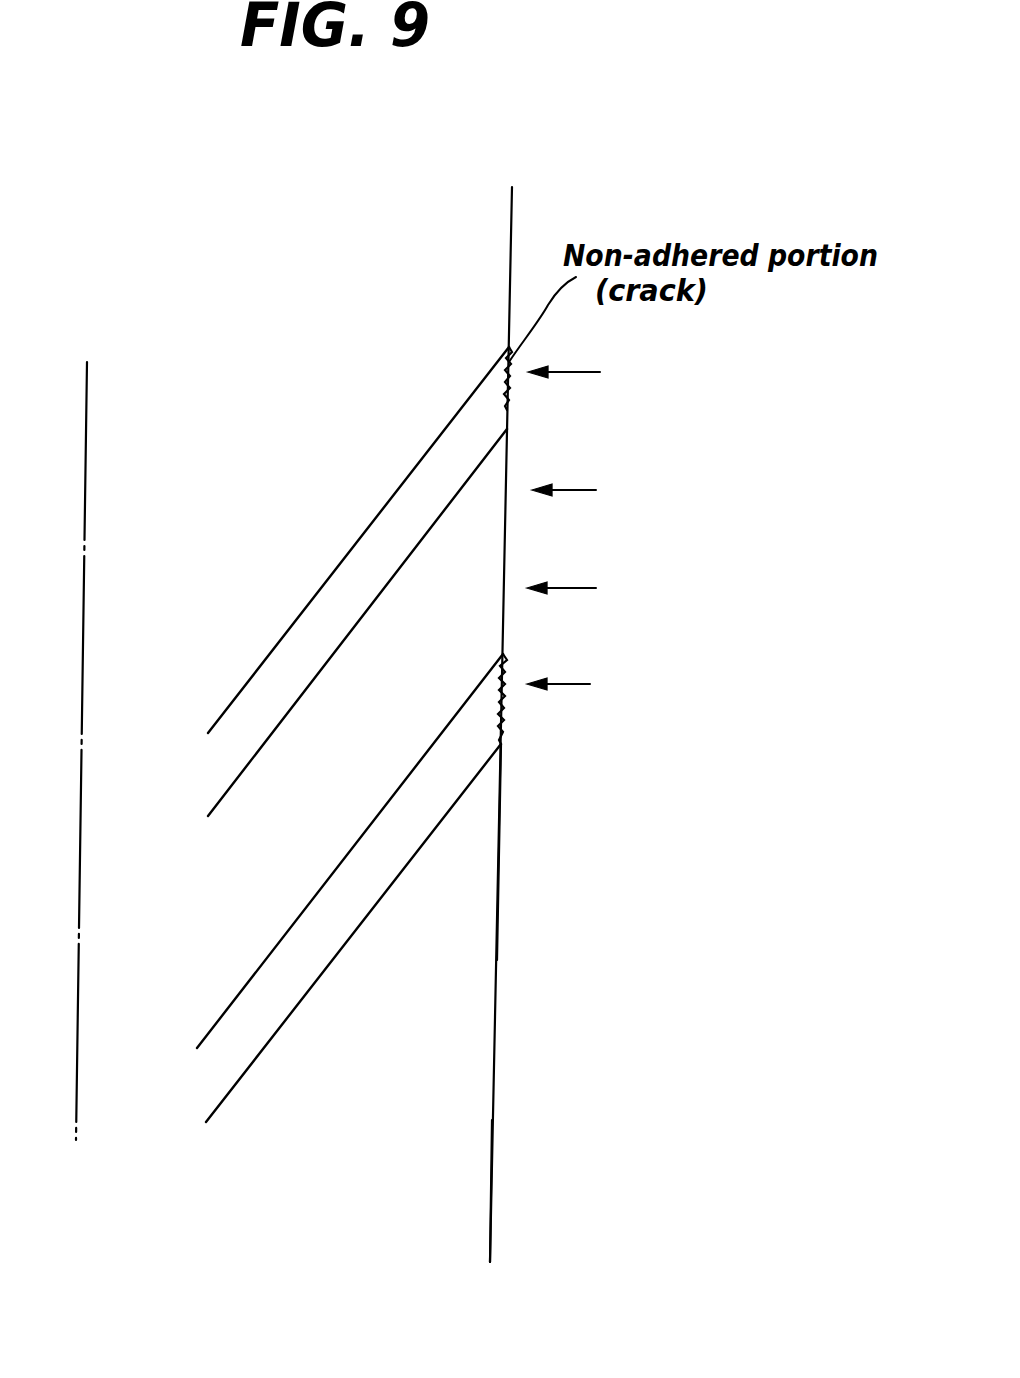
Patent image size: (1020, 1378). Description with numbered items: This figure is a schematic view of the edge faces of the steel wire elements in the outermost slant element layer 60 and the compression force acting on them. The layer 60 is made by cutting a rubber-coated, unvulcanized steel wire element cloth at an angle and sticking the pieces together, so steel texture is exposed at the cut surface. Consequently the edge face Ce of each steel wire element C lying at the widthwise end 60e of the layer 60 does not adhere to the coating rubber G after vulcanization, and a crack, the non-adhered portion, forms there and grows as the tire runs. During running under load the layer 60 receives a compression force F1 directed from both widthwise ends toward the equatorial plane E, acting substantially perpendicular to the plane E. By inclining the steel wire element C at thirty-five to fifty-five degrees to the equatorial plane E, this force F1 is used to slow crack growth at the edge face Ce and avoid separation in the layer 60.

The equatorial plane E is at (88, 390).
The compression force F1 is at (589, 533).
The edge face Ce is at (506, 401).
The steel wire element C is at (378, 565).
The coating rubber G is at (480, 846).
The outermost slant element layer 60 is at (425, 1018).
The widthwise end 60e is at (492, 1150).